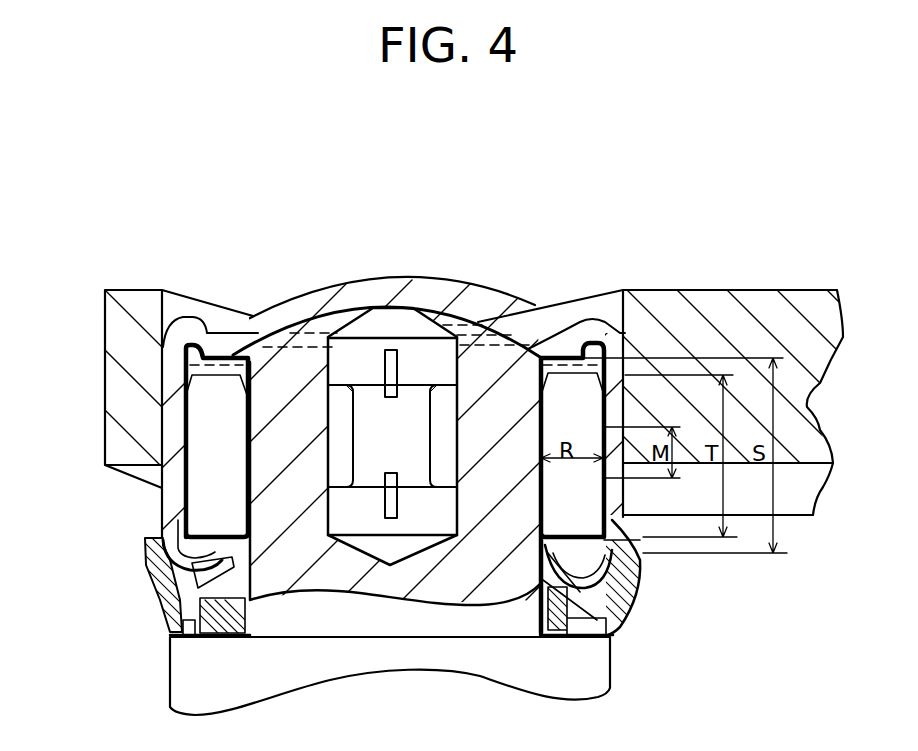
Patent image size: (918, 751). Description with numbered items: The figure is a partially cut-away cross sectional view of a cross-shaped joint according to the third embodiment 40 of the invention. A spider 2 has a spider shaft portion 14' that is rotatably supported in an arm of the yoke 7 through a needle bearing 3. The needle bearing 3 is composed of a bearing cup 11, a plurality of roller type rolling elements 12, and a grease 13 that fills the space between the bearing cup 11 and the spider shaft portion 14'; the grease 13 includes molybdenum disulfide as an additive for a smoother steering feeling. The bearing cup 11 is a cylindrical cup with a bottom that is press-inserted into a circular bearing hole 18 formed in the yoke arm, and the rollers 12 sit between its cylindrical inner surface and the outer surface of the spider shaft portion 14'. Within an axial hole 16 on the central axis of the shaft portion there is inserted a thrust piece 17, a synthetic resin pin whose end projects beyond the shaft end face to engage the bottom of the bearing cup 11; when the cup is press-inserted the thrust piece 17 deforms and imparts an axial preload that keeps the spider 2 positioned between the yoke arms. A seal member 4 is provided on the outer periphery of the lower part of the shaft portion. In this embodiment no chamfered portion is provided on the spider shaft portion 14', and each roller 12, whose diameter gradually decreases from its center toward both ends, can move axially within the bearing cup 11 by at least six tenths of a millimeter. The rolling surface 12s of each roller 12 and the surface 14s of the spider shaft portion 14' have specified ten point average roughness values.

The spider 2 is at (500, 320).
The needle bearing 3 is at (328, 284).
The seal member 4 is at (632, 600).
The yoke 7 is at (705, 302).
The bearing cup 11 is at (423, 285).
The roller type rolling element 12 is at (207, 480).
The rolling surface of the roller 12s is at (265, 340).
The grease 13 is at (273, 402).
The surface of the spider shaft portion 14s is at (245, 452).
The spider shaft portion 14' is at (150, 563).
The axial hole 16 is at (342, 505).
The thrust piece 17 is at (418, 517).
The bearing hole 18 is at (593, 307).
The third embodiment 40 is at (407, 250).